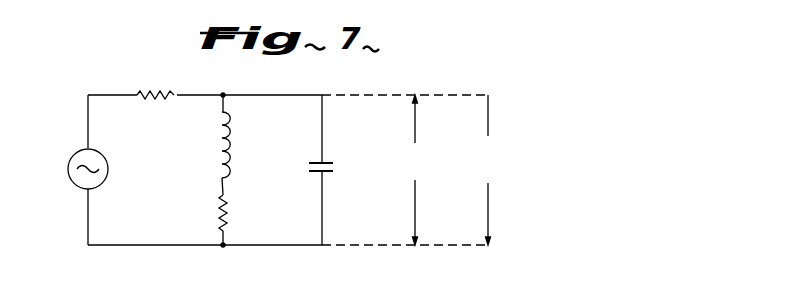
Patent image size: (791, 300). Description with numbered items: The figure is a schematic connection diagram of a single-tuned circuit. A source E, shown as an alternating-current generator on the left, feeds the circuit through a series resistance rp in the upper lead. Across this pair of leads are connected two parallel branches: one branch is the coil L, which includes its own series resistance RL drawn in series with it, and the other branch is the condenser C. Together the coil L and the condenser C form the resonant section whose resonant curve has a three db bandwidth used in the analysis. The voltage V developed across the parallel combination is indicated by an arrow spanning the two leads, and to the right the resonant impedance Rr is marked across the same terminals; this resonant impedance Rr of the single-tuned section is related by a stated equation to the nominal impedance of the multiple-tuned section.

The voltage source μĖ E is at (62, 169).
The plate resistance rp is at (155, 75).
The coil L is at (208, 145).
The series resistance RL is at (206, 220).
The condenser C is at (332, 170).
The output voltage V is at (415, 170).
The resonant impedance Rr is at (554, 170).